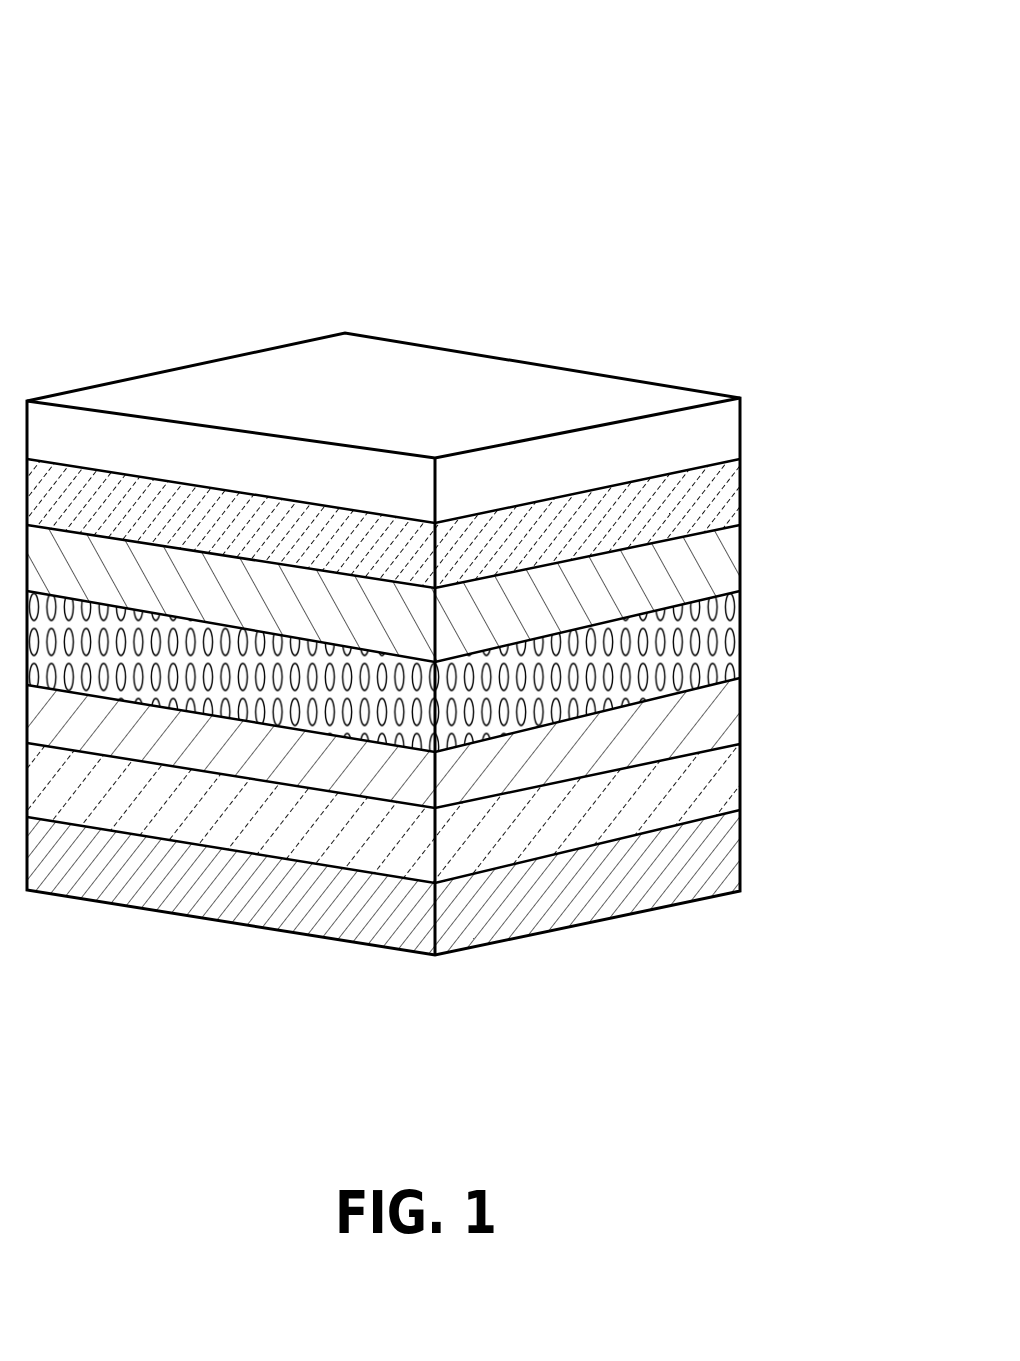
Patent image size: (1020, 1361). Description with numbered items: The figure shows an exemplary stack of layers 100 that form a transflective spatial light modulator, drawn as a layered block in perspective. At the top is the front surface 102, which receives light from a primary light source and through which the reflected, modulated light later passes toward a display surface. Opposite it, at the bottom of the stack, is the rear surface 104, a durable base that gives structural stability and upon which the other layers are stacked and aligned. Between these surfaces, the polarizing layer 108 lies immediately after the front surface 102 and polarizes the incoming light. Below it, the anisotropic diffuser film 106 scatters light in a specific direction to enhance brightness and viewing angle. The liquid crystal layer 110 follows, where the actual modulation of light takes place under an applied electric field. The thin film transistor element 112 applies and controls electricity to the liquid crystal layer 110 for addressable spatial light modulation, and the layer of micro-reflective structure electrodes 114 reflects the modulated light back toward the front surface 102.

The stack of layers 100 is at (791, 74).
The front surface 102 is at (426, 381).
The rear surface 104 is at (436, 970).
The anisotropic diffuser film 106 is at (756, 563).
The polarizing layer 108 is at (756, 498).
The liquid crystal layer 110 is at (756, 613).
The thin film transistor element 112 is at (756, 714).
The layer of micro-reflective structure electrodes 114 is at (756, 779).